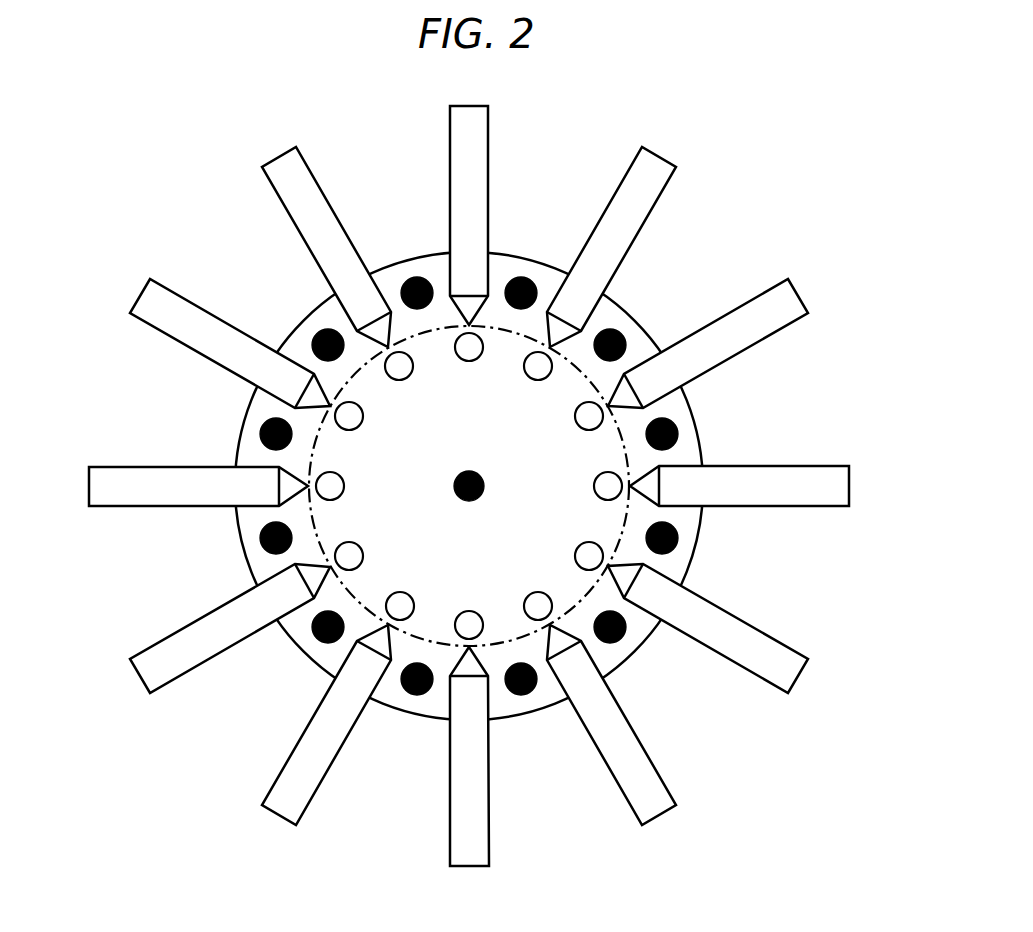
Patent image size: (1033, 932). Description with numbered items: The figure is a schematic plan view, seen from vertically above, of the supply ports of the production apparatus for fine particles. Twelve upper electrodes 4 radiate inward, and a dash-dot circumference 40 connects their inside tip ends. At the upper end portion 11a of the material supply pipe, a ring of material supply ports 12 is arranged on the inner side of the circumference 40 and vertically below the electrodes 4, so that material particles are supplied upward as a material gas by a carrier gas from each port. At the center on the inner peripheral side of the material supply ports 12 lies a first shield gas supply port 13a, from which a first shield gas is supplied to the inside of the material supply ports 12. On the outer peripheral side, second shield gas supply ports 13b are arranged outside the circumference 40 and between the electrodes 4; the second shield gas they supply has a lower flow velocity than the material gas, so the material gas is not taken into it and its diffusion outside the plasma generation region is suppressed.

The upper electrode 4 is at (470, 132).
The upper end portion of material supply pipe 11a is at (293, 320).
The material supply port 12 is at (363, 420).
The first shield gas supply port 13a is at (479, 474).
The second shield gas supply port 13b is at (387, 273).
The circumference 40 is at (503, 330).